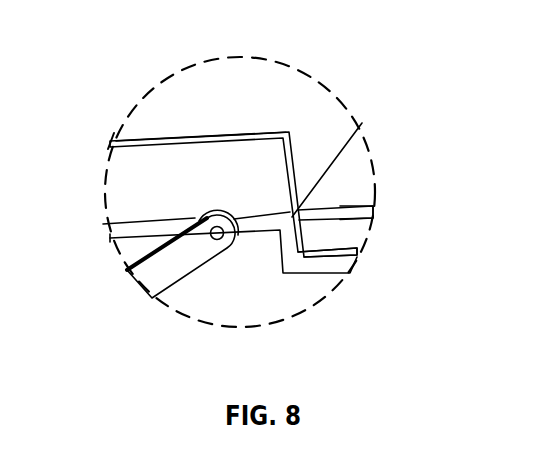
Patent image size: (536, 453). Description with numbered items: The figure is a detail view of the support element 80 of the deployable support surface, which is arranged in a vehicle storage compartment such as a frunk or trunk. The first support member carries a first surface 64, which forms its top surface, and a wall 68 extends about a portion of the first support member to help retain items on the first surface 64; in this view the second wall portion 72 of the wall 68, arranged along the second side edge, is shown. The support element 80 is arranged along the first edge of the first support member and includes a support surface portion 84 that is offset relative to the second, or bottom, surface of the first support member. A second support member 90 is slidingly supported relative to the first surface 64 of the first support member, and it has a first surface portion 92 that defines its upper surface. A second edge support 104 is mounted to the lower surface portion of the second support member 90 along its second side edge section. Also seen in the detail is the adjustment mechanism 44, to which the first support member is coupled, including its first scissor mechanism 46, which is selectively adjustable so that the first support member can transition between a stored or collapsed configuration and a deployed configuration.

The adjustment mechanism 44 is at (174, 300).
The first scissor mechanism 46 is at (134, 279).
The first surface 64 is at (303, 157).
The wall 68 is at (145, 138).
The second wall portion 72 is at (107, 175).
The support element 80 is at (314, 285).
The support surface portion 84 is at (353, 252).
The second support member 90 is at (354, 152).
The first surface portion 92 is at (348, 193).
The second edge support 104 is at (356, 229).